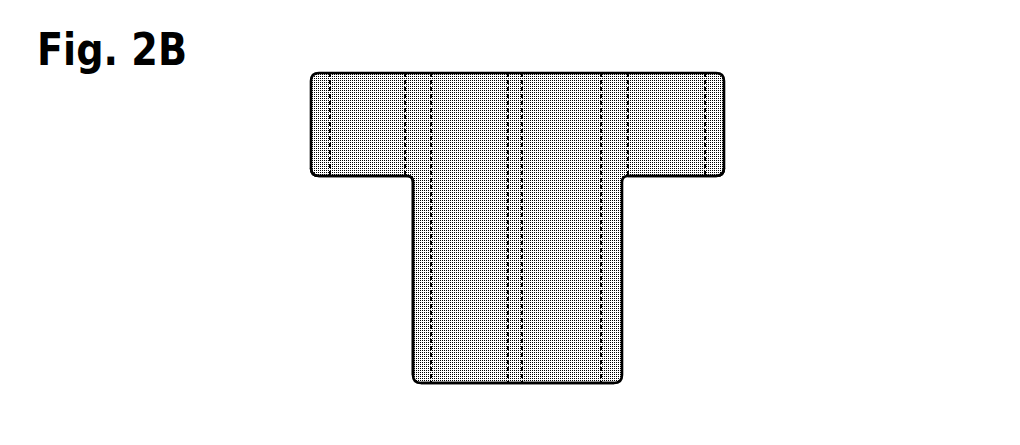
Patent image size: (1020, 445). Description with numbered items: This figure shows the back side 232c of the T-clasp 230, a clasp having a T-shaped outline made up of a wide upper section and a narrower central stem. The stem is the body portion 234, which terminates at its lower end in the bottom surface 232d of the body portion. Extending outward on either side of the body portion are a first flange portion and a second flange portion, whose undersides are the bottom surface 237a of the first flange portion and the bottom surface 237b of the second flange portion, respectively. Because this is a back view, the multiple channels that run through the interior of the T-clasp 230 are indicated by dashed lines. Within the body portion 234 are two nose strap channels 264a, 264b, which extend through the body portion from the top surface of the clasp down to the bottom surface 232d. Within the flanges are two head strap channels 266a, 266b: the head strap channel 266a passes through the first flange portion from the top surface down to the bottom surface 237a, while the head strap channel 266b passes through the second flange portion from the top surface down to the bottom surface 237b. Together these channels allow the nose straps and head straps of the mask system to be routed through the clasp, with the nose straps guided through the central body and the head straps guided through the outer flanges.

The T-clasp 230 is at (783, 113).
The body portion 234 is at (513, 82).
The bottom surface of first flange portion 237a is at (325, 177).
The bottom surface of second flange portion 237b is at (713, 178).
The back side 232c is at (460, 213).
The bottom surface of body portion 232d is at (515, 383).
The nose strap channel 264a is at (498, 281).
The nose strap channel 264b is at (592, 281).
The head strap channel 266a is at (395, 145).
The head strap channel 266b is at (695, 145).